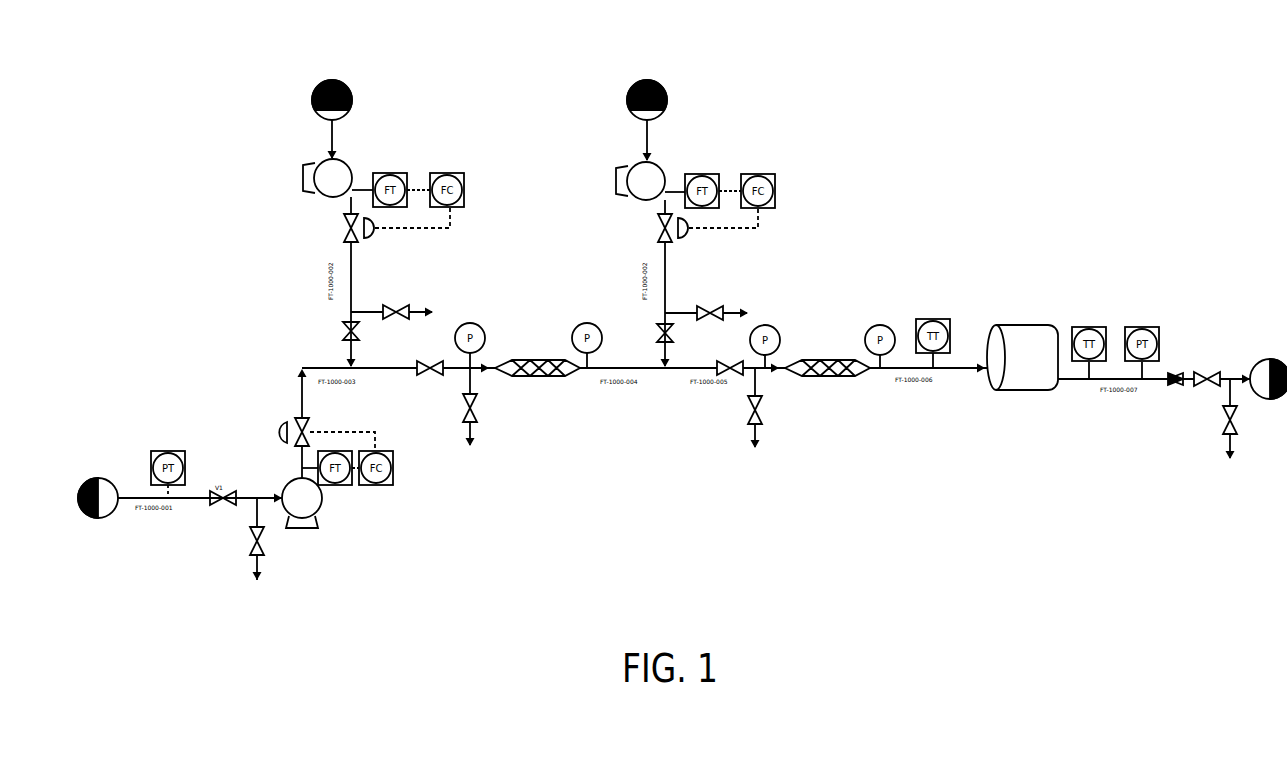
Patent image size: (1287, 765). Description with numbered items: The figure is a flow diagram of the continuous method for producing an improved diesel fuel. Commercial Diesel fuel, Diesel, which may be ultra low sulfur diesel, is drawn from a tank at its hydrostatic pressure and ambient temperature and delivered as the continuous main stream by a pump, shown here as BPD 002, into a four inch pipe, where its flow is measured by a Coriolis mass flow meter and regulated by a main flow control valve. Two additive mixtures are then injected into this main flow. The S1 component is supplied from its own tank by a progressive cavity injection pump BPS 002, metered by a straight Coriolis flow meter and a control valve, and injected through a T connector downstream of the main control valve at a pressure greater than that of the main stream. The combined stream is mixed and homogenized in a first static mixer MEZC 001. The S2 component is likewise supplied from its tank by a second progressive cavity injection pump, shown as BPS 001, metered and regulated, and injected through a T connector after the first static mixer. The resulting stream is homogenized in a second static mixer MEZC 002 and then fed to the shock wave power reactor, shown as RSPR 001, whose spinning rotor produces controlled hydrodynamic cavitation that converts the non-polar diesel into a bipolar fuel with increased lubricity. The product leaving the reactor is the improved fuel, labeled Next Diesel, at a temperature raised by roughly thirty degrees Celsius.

The S1 component S1 is at (350, 89).
The S2 component S2 is at (647, 89).
The progressive cavity injection pump BPS 002 is at (345, 171).
The additive dosing pump BPS 001 is at (657, 174).
The diesel feed pump BPD 002 is at (322, 507).
The first static mixer MEZC 001 is at (537, 379).
The second static mixer MEZC 002 is at (827, 380).
The residence/reaction tank RSPR 001 is at (1033, 368).
The commercial Diesel fuel Diesel is at (98, 478).
The treated diesel outlet Next Diesel is at (1268, 361).